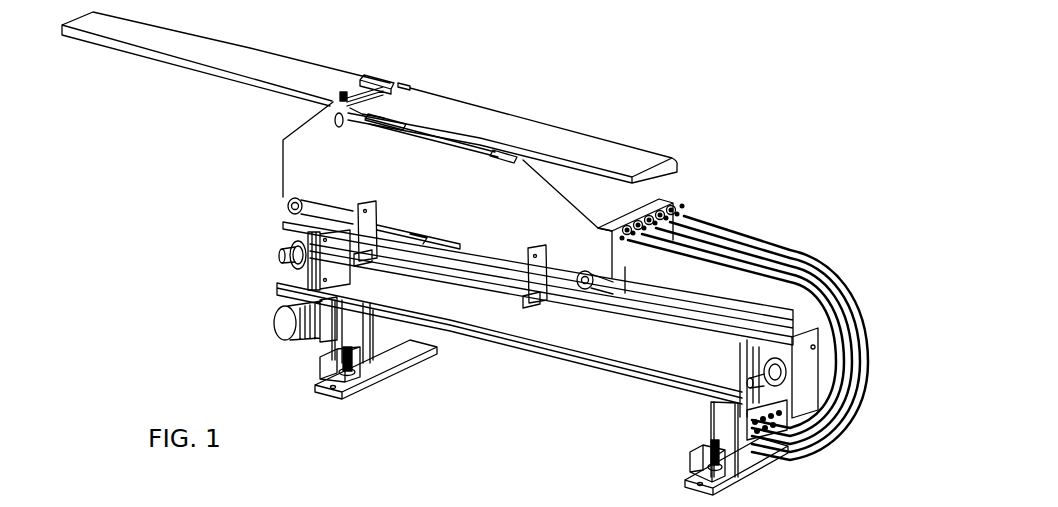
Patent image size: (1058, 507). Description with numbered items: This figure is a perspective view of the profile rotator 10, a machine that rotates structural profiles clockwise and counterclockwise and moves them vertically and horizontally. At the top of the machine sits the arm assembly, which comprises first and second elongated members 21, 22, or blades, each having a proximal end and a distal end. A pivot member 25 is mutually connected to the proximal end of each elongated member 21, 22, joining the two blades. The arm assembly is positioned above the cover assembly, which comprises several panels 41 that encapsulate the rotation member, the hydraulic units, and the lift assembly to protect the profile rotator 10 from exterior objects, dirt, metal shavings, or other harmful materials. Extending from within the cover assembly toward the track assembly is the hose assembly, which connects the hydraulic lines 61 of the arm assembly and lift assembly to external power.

The profile rotator 10 is at (705, 53).
The first elongated member 21 is at (520, 138).
The second elongated member 22 is at (212, 53).
The pivot member 25 is at (383, 86).
The panels 41 is at (300, 175).
The hydraulic lines 61 is at (783, 248).